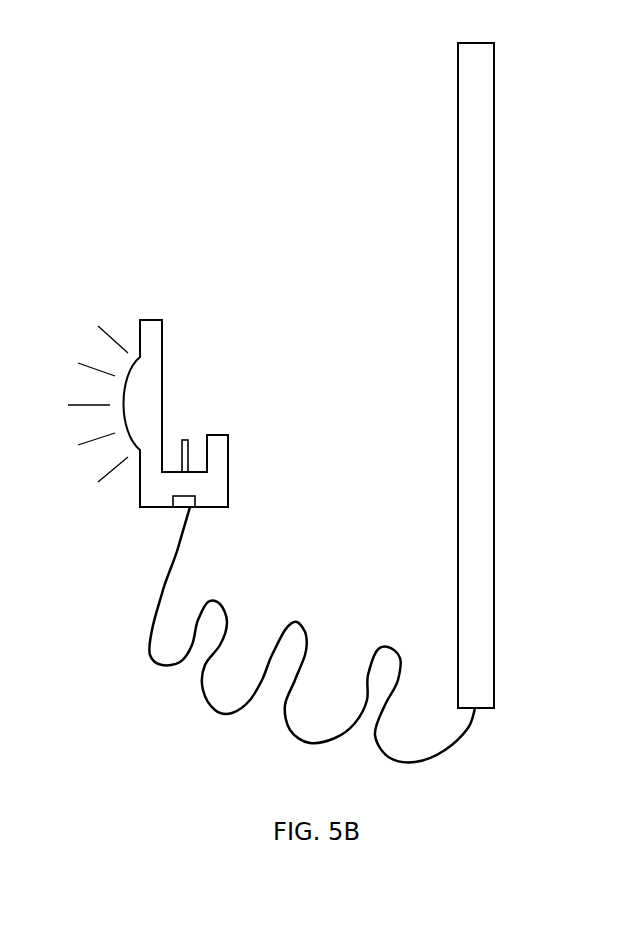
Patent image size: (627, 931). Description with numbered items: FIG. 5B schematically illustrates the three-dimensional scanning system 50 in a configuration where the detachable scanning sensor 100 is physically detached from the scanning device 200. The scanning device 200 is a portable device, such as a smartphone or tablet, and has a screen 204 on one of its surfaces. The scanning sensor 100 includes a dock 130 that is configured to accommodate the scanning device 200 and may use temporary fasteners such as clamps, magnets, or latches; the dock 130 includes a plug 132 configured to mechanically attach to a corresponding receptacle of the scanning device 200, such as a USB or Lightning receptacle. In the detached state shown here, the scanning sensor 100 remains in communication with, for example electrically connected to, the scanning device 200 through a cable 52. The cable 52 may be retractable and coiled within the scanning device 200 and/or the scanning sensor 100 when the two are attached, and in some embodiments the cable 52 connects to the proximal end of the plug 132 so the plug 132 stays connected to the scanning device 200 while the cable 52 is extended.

The 3D scanning system 50 is at (188, 124).
The scanning sensor 100 is at (153, 320).
The dock 130 is at (210, 491).
The plug 132 is at (188, 450).
The scanning device 200 is at (465, 88).
The screen 204 is at (494, 133).
The cable 52 is at (190, 707).